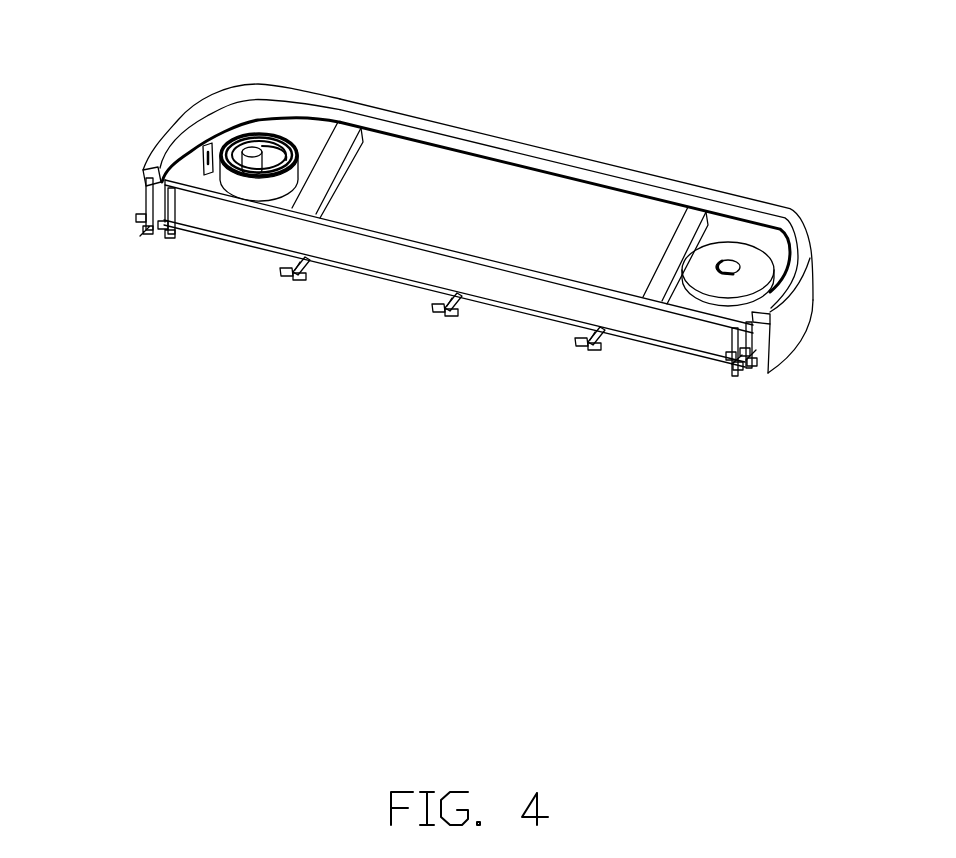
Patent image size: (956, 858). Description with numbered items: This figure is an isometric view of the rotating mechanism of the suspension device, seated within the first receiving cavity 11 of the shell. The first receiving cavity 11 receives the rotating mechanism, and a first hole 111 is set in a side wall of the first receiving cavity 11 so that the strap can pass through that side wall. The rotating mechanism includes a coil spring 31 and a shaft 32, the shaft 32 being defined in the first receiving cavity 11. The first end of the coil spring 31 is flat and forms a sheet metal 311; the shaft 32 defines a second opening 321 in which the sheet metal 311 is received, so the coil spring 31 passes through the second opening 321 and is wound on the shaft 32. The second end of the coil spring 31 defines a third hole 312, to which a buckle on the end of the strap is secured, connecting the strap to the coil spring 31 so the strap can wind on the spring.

The first receiving cavity 11 is at (310, 130).
The first hole 111 is at (147, 198).
The coil spring 31 is at (260, 195).
The sheet metal 311 is at (287, 137).
The third hole 312 is at (205, 160).
The shaft 32 is at (240, 135).
The second opening 321 is at (252, 165).